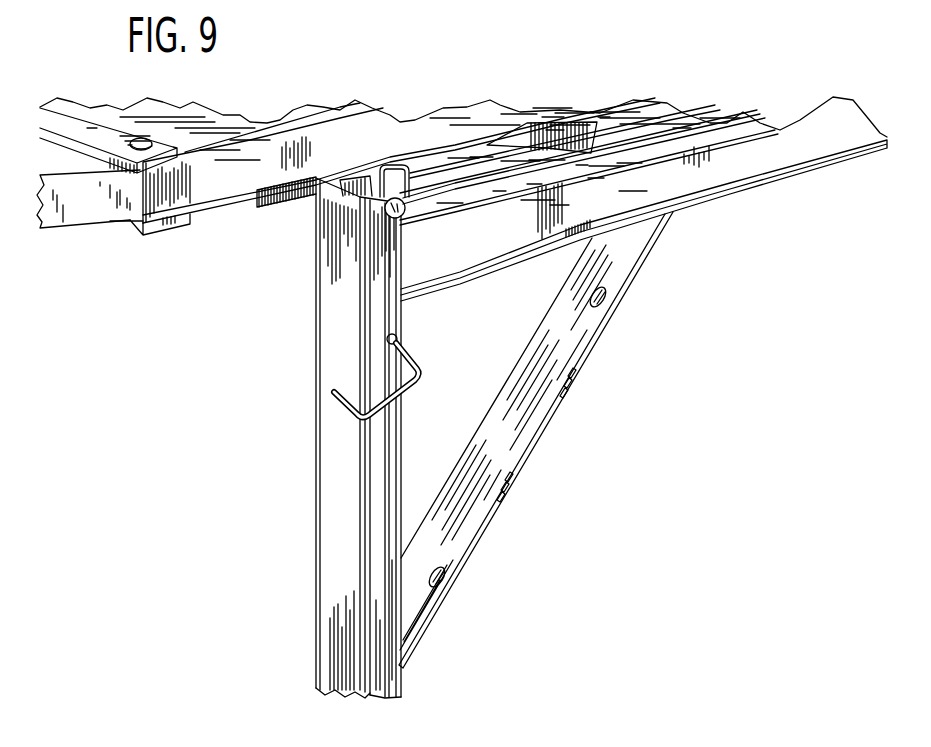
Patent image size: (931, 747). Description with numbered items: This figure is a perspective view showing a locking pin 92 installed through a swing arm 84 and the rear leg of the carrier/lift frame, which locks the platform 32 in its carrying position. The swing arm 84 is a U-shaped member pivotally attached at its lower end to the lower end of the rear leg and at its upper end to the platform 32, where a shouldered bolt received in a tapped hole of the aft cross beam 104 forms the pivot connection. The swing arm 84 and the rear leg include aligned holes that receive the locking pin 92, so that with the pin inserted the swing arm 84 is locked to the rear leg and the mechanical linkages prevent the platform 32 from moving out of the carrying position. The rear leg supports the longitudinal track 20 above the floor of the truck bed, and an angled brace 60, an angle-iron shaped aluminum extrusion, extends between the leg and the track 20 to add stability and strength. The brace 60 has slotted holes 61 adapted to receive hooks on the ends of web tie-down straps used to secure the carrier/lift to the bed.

The right longitudinal track 20 is at (672, 187).
The platform 32 is at (221, 214).
The angled brace 60 is at (517, 452).
The slotted holes 61 is at (607, 296).
The left swing arm 84 is at (380, 627).
The locking pin 92 is at (398, 336).
The aft cross beam 104 is at (291, 196).